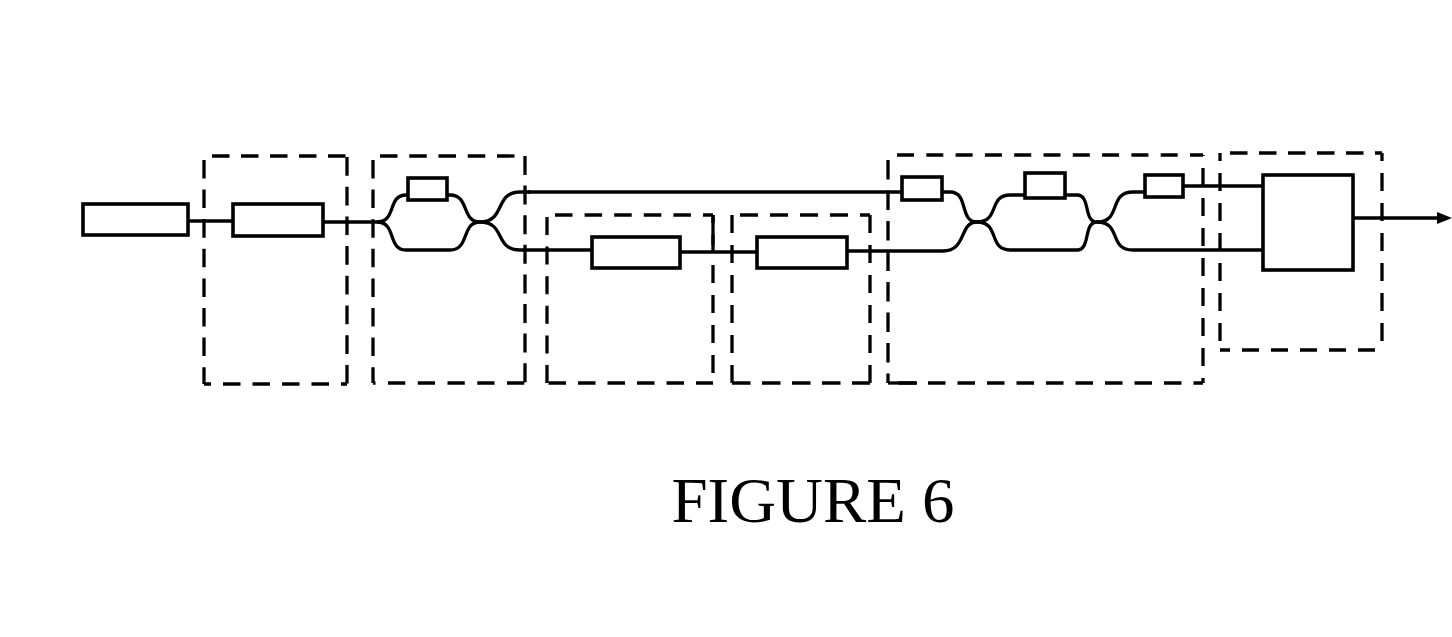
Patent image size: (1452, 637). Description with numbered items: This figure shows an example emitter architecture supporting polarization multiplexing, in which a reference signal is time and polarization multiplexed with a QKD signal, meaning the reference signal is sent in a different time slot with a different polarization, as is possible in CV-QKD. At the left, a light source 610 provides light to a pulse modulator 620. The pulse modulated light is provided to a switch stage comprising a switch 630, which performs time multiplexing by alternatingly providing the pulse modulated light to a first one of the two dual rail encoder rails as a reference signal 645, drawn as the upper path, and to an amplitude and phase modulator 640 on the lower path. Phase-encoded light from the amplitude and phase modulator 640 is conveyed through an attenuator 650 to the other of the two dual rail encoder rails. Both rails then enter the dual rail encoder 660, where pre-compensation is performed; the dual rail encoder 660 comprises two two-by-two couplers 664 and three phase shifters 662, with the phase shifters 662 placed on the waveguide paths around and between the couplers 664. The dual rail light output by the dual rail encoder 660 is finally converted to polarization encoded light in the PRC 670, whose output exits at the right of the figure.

The light source 610 is at (137, 225).
The pulse modulator 620 is at (277, 228).
The switch 630 is at (425, 180).
The amplitude and phase modulator 640 is at (640, 257).
The reference signal 645 is at (693, 192).
The attenuator 650 is at (802, 257).
The dual rail encoder 660 is at (1075, 209).
The phase shifters 662 is at (1163, 180).
The 2×2 couplers 664 is at (979, 223).
The PRC 670 is at (1312, 253).